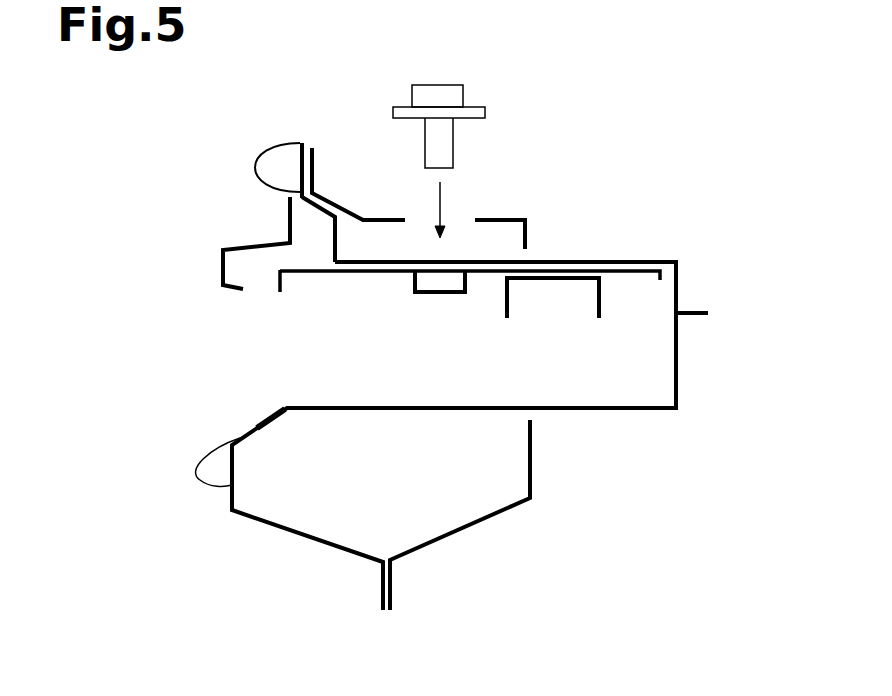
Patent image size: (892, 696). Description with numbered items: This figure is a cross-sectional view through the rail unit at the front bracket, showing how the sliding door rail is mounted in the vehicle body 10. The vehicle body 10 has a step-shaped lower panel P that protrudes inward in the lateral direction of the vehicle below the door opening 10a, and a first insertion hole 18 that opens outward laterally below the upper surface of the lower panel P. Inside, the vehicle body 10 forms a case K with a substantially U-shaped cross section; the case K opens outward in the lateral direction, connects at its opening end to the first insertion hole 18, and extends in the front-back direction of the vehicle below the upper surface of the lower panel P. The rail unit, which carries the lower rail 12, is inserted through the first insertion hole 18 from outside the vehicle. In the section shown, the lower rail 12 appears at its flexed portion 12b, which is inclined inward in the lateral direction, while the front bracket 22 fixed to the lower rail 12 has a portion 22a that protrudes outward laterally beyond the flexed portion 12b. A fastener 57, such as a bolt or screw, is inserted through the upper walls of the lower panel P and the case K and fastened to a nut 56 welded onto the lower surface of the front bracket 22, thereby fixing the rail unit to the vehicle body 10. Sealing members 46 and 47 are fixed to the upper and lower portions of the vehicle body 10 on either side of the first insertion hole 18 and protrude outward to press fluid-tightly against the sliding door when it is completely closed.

The vehicle body 10 is at (240, 243).
The door opening 10a is at (300, 141).
The lower panel P is at (387, 219).
The sealing member 46 is at (257, 152).
The fastener 57 is at (452, 142).
The front bracket 22 is at (640, 268).
The portion of the front bracket 22a is at (305, 270).
The nut 56 is at (440, 293).
The lower rail 12 is at (590, 308).
The flexed portion 12b is at (601, 297).
The case K is at (678, 357).
The first insertion hole 18 is at (238, 438).
The sealing member 47 is at (203, 480).